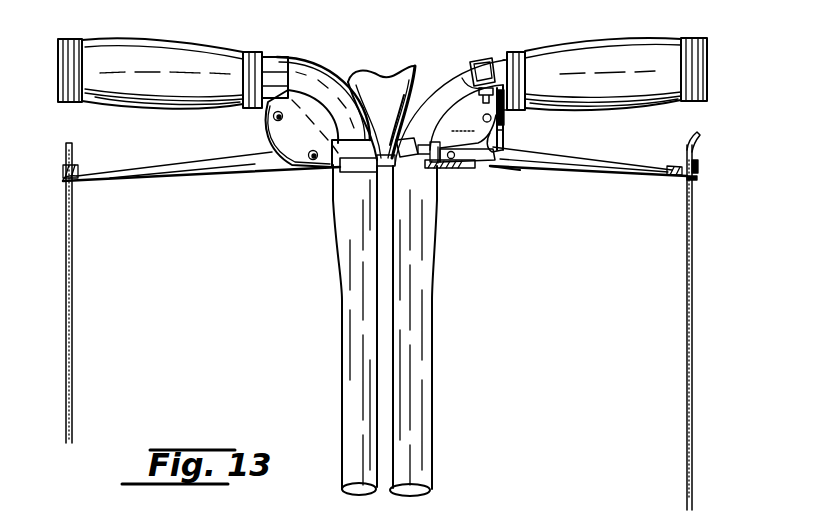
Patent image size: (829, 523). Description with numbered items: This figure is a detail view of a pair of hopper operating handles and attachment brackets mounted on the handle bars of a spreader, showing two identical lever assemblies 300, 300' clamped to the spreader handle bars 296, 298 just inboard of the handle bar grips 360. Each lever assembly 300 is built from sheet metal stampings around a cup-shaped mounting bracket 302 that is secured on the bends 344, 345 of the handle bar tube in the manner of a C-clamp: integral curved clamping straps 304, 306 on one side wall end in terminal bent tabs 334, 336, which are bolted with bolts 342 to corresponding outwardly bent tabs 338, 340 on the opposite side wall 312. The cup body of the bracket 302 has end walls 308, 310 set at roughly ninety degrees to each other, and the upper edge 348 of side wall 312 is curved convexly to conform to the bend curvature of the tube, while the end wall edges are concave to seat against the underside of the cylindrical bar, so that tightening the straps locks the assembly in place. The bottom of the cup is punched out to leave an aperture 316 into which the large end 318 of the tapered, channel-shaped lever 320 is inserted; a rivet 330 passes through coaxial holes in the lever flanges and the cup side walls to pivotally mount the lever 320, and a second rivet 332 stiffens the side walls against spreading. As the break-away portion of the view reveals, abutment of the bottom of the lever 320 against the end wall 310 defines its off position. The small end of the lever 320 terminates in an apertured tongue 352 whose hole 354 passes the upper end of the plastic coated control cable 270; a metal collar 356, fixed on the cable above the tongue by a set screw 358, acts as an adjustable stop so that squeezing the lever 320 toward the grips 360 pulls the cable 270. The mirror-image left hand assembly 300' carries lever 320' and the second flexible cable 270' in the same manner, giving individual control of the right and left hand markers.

The handle bar grips 360 is at (120, 48).
The spreader handle bar 296 is at (268, 66).
The spreader handle bar 298 is at (503, 73).
The second rivet 332 is at (600, 76).
The lever assembly 300' is at (292, 112).
The lever assembly 300 is at (504, 118).
The clamping strap 306 is at (366, 166).
The bend of handle bar tube 344 is at (352, 78).
The bend of handle bar tube 345 is at (414, 72).
The bolts 342 is at (412, 97).
The terminal bent tab 334 is at (470, 66).
The clamping strap 304 is at (486, 88).
The outwardly bent tab 338 is at (472, 82).
The side wall 312 is at (437, 130).
The upper edge of side wall 348 is at (469, 125).
The mounting bracket 302 is at (505, 115).
The aperture 316 is at (498, 143).
The rivet 330 is at (467, 160).
The outwardly bent tab 340 is at (415, 168).
The end wall 310 is at (448, 170).
The large end of lever 318 is at (460, 168).
The terminal bent tab 336 is at (440, 100).
The end wall 308 is at (500, 152).
The tapered lever 320 is at (588, 174).
The apertured tongue 352 is at (676, 178).
The control cable 270 is at (668, 327).
The metal collar 356 is at (684, 160).
The set screw 358 is at (699, 166).
The hole 354 is at (697, 178).
The lever 320' is at (201, 183).
The flexible cable 270' is at (100, 293).